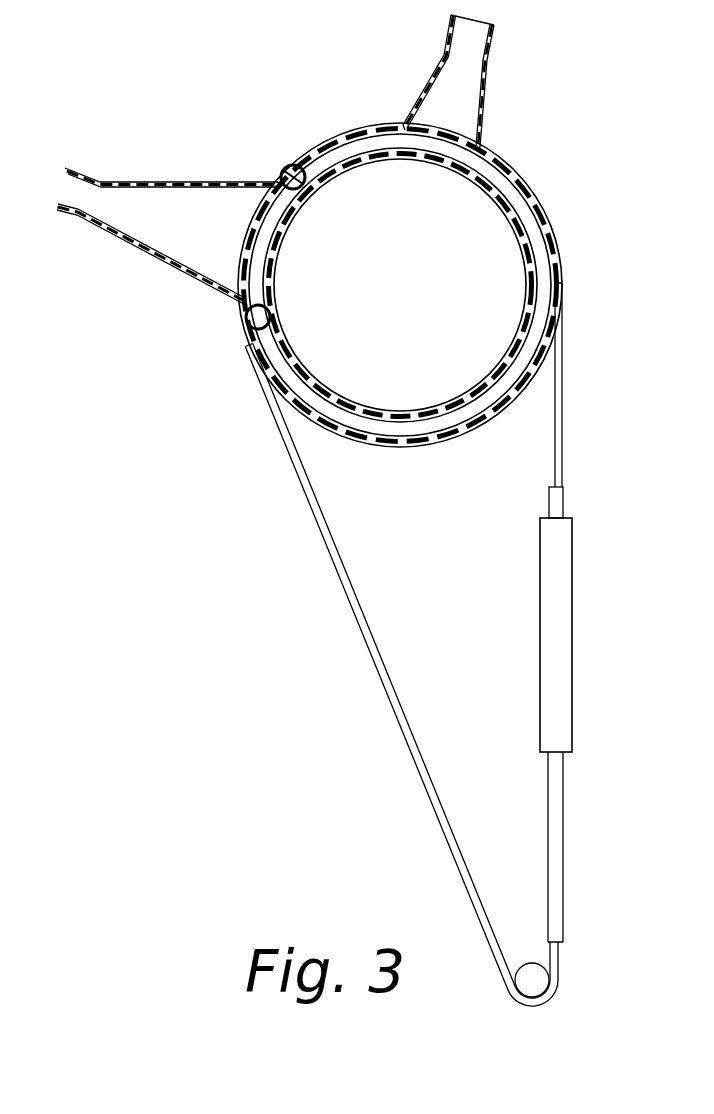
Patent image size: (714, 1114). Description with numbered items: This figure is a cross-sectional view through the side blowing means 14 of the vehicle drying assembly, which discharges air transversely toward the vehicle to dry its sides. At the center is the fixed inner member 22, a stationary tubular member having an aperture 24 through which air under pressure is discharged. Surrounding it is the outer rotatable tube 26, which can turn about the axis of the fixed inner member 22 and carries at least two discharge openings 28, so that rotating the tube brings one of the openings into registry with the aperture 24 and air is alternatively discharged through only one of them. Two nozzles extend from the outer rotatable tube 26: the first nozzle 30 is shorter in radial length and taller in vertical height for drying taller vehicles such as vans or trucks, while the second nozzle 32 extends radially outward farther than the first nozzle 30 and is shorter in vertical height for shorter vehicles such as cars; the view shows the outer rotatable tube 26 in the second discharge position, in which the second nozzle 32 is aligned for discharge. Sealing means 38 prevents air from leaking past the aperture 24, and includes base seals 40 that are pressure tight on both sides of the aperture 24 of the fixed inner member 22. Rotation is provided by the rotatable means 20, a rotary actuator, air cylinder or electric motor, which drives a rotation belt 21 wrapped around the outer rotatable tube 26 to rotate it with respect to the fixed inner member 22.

The side blowing means 14 is at (565, 269).
The rotatable means 20 is at (573, 648).
The rotation belt 21 is at (336, 566).
The fixed inner member 22 is at (510, 203).
The aperture 24 is at (270, 230).
The outer rotatable tube 26 is at (552, 240).
The discharge openings 28 is at (447, 132).
The first nozzle 30 is at (498, 52).
The second nozzle 32 is at (146, 180).
The sealing means 38 is at (300, 162).
The base seals 40 is at (290, 165).